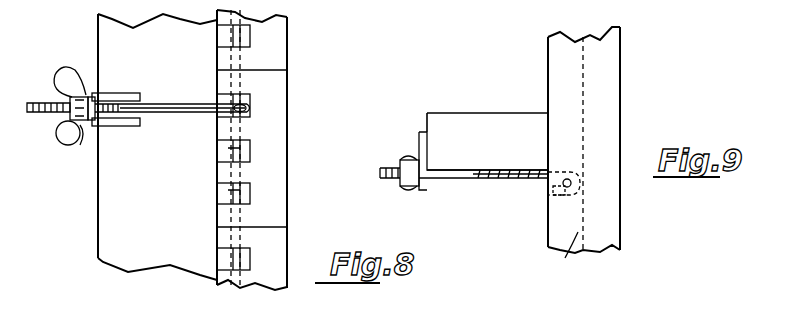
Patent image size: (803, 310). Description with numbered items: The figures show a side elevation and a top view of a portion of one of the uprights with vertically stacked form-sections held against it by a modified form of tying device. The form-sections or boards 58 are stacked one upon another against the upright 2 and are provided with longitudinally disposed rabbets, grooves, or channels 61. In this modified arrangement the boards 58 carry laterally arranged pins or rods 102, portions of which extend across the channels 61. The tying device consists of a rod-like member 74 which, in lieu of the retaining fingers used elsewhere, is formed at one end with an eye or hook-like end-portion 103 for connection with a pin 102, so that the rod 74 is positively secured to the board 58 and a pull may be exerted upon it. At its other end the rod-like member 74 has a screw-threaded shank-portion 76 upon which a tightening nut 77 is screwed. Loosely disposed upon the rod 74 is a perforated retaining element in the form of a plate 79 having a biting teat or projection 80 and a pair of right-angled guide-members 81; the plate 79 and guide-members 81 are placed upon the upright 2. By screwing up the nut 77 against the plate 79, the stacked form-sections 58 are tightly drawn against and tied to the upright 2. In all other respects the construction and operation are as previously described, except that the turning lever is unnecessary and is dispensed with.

In FIG. 8, the upright 2 is at (107, 208).
In FIG. 9, the upright 2 is at (493, 113).
In FIG. 8, the form-section 58 is at (275, 90).
In FIG. 9, the form-section 58 is at (608, 202).
In FIG. 8, the rabbet, groove, or channel 61 is at (220, 193).
In FIG. 9, the rabbet, groove, or channel 61 is at (560, 262).
In FIG. 8, the rod-like member 74 is at (178, 101).
In FIG. 9, the rod-like member 74 is at (505, 165).
In FIG. 8, the screw-threaded shank-portion 76 is at (56, 83).
In FIG. 8, the tightening nut 77 is at (64, 132).
In FIG. 9, the tightening nut 77 is at (403, 190).
In FIG. 8, the plate 79 is at (88, 135).
In FIG. 9, the plate 79 is at (419, 138).
In FIG. 9, the biting teat or projection 80 is at (430, 138).
In FIG. 8, the right-angled guide-member 81 is at (124, 95).
In FIG. 9, the right-angled guide-member 81 is at (452, 179).
In FIG. 8, the pin or rod 102 is at (235, 192).
In FIG. 9, the pin or rod 102 is at (564, 183).
In FIG. 8, the eye or hook-like end-portion 103 is at (250, 108).
In FIG. 9, the eye or hook-like end-portion 103 is at (560, 196).